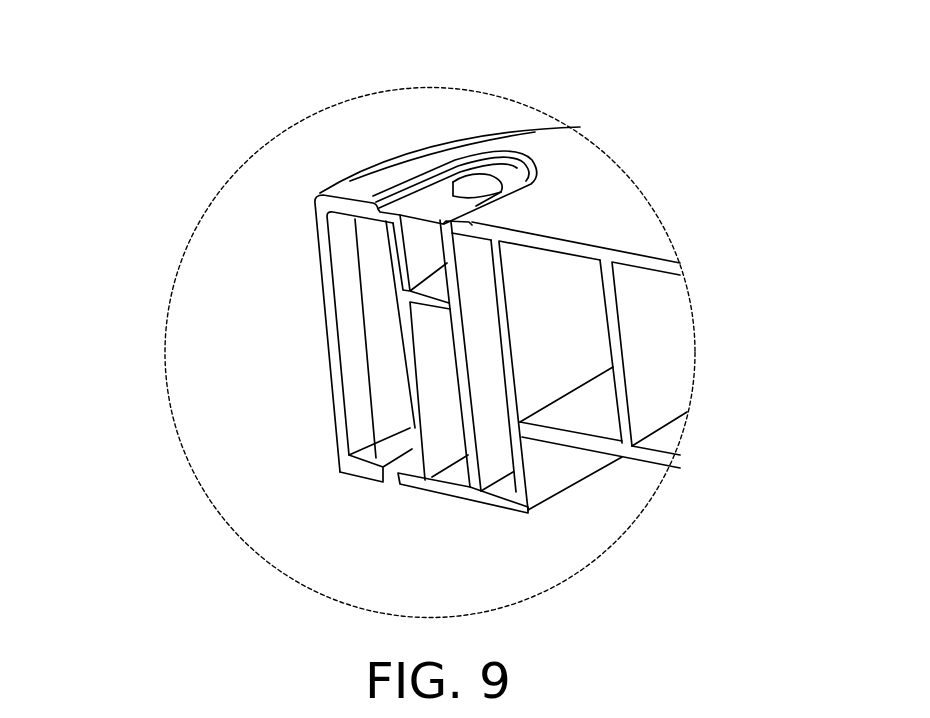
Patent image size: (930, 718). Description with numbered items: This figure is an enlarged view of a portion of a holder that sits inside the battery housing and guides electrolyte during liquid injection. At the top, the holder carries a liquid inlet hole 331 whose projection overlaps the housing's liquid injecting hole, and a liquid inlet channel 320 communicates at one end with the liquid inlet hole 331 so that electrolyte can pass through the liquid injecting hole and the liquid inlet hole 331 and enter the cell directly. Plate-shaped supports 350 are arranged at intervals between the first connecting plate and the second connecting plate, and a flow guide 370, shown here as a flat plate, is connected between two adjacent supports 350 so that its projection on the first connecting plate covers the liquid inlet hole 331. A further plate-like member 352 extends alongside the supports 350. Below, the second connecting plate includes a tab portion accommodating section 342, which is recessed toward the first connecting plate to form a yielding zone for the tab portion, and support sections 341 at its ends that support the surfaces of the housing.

The liquid inlet channel 320 is at (429, 213).
The liquid inlet hole 331 is at (488, 172).
The flow guide 370 is at (405, 291).
The supports 350 is at (413, 378).
The right frame rib 352 is at (620, 388).
The tab portion accommodating section 342 is at (577, 442).
The support sections 341 is at (460, 490).